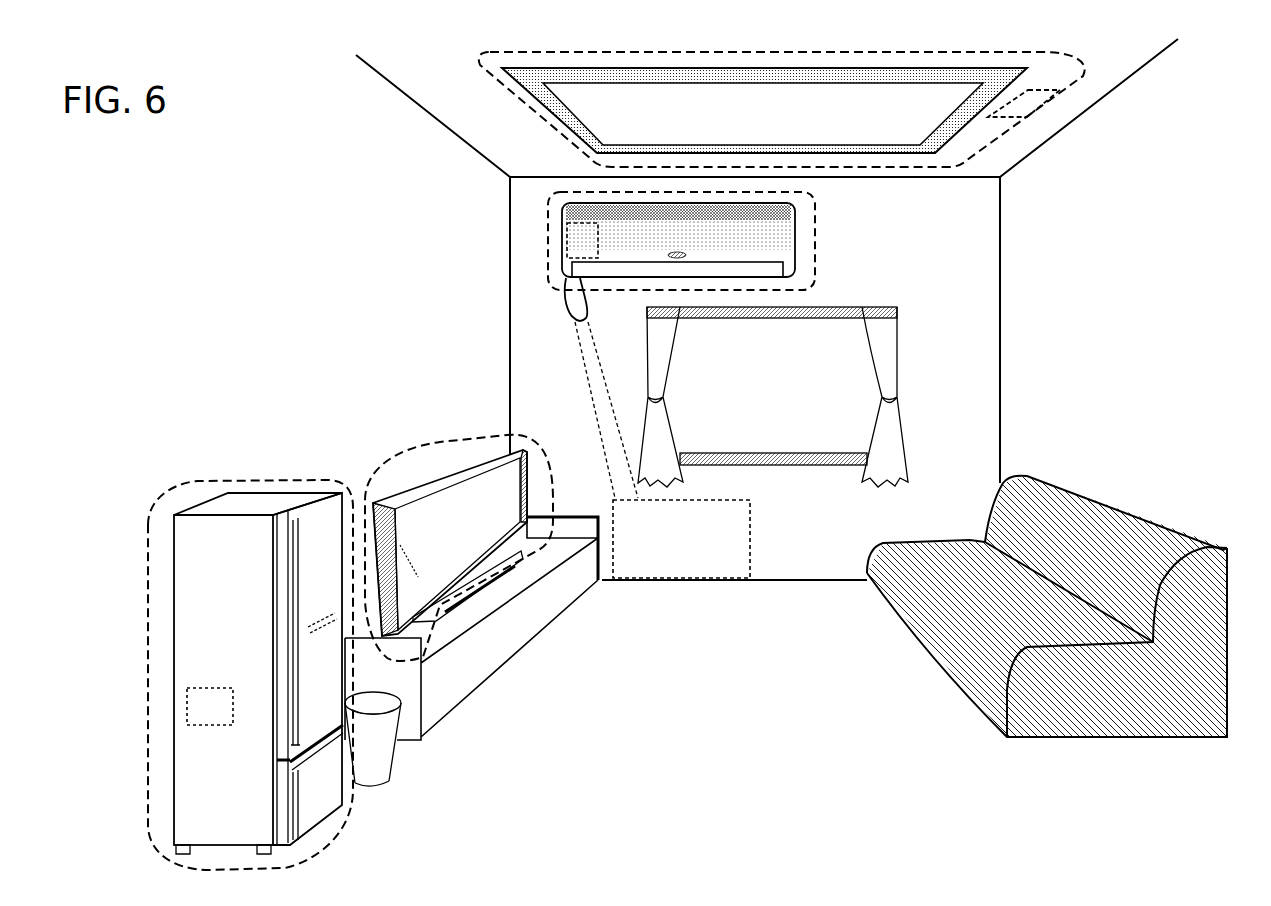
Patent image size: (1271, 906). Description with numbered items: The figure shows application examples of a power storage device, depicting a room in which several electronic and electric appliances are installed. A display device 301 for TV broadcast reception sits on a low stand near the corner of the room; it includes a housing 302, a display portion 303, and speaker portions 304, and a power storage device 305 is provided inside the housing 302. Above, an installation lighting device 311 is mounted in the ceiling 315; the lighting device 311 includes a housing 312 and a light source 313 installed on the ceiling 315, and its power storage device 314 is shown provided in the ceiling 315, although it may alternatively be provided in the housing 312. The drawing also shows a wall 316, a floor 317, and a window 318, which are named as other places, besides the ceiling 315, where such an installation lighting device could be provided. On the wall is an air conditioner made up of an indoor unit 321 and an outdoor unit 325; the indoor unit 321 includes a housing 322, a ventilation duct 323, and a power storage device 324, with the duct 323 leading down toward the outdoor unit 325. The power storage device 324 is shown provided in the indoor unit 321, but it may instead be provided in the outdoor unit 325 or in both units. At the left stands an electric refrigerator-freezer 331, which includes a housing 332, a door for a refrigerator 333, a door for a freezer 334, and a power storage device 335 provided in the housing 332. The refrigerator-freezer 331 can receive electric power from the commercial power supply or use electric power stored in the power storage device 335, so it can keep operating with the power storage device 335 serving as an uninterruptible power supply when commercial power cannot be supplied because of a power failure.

The display device 301 is at (407, 458).
The housing 302 is at (467, 475).
The display portion 303 is at (495, 465).
The speaker portions 304 is at (520, 455).
The power storage device 305 is at (400, 545).
The installation lighting device 311 is at (548, 110).
The housing 312 is at (630, 132).
The light source 313 is at (590, 138).
The power storage device 314 is at (1043, 103).
The ceiling 315 is at (441, 82).
The wall 316 is at (1060, 207).
The floor 317 is at (806, 637).
The window 318 is at (833, 442).
The indoor unit 321 is at (548, 213).
The housing 322 is at (567, 233).
The ventilation duct 323 is at (567, 275).
The power storage device 324 is at (567, 252).
The outdoor unit 325 is at (656, 529).
The electric refrigerator-freezer 331 is at (150, 543).
The housing 332 is at (187, 597).
The door for a refrigerator 333 is at (320, 672).
The door for a freezer 334 is at (318, 797).
The power storage device 335 is at (187, 702).